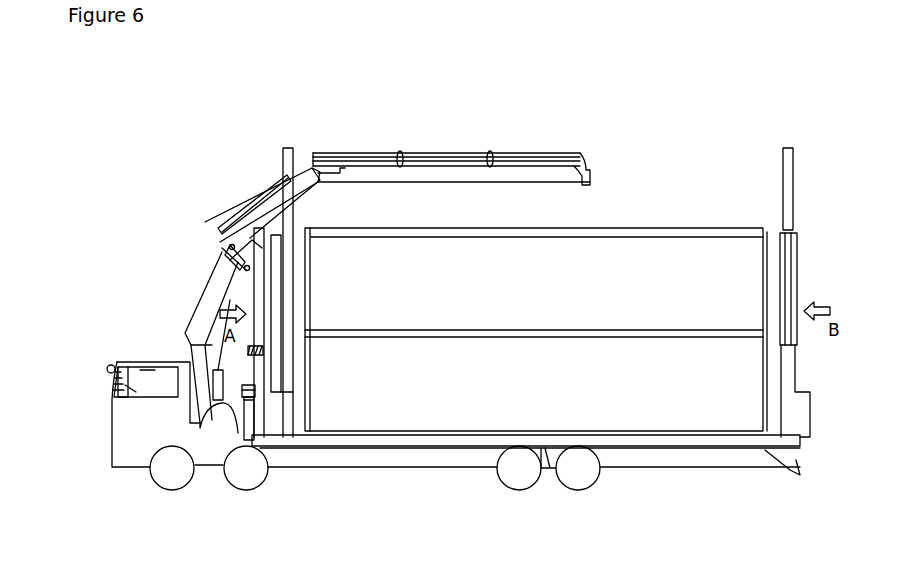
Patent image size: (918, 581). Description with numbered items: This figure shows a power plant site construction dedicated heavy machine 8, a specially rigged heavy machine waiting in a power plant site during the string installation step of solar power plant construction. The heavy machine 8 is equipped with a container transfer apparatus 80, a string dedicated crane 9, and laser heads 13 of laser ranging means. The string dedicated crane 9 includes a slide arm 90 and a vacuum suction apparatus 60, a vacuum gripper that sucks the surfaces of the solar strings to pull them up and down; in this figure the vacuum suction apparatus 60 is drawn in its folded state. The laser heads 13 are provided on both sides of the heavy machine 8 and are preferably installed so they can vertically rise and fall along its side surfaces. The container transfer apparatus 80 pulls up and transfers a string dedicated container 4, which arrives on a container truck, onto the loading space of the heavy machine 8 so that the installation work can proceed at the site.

The string dedicated container 4 is at (670, 252).
The power plant site construction dedicated heavy machine 8 is at (633, 158).
The string dedicated crane 9 is at (212, 204).
The laser heads 13 is at (263, 350).
The vacuum suction apparatus 60 is at (344, 153).
The container transfer apparatus 80 is at (290, 170).
The slide arm 90 is at (440, 144).